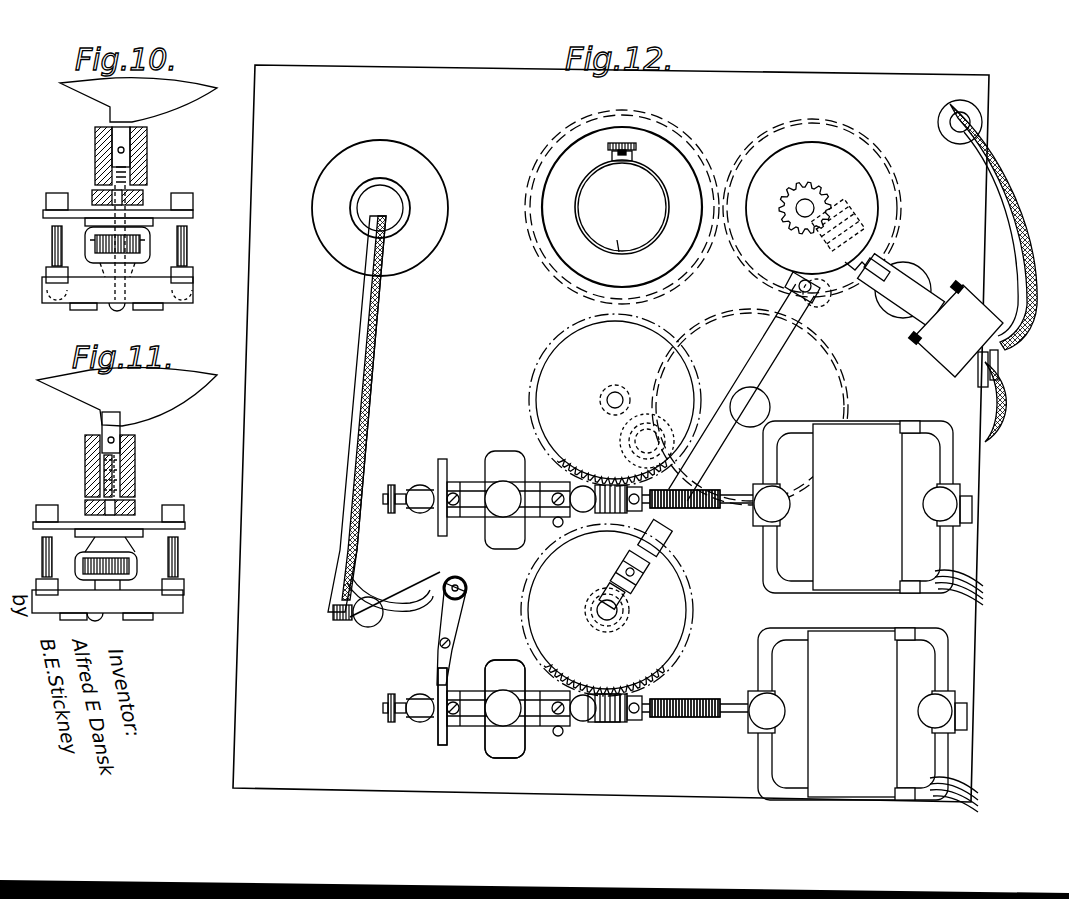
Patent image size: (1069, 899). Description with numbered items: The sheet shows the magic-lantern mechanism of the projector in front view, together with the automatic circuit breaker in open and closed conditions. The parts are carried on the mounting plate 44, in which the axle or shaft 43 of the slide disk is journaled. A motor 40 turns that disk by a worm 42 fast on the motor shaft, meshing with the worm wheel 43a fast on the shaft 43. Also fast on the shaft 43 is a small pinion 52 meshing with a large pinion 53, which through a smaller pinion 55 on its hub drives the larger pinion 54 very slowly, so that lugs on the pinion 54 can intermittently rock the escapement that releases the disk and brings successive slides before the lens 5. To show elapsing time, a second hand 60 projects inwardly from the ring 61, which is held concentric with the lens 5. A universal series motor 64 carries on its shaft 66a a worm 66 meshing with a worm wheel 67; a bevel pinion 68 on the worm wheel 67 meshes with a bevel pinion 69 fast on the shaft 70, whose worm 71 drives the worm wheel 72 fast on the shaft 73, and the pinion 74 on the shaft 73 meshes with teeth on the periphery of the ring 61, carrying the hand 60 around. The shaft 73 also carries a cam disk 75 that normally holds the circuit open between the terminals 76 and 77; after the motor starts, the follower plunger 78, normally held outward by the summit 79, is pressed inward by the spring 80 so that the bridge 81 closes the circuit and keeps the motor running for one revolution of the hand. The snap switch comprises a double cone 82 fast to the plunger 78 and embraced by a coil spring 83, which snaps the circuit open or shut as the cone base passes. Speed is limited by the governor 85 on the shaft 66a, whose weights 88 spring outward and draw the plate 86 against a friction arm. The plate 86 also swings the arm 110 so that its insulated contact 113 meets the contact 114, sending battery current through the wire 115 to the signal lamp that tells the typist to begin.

In FIG. 12, the lens 5 is at (600, 182).
In FIG. 12, the motor 40 is at (868, 513).
In FIG. 12, the worm 42 is at (652, 514).
In FIG. 12, the axle or shaft 43 is at (615, 391).
In FIG. 12, the worm wheel 43a is at (533, 410).
In FIG. 12, the mounting plate 44 is at (240, 645).
In FIG. 12, the small pinion 52 is at (600, 412).
In FIG. 12, the large pinion 53 is at (620, 444).
In FIG. 12, the larger pinion 54 is at (712, 322).
In FIG. 12, the smaller pinion 55 is at (647, 414).
In FIG. 12, the second hand 60 is at (620, 250).
In FIG. 12, the ring 61 is at (692, 156).
In FIG. 12, the series motor 64 is at (863, 720).
In FIG. 12, the worm 66 is at (618, 723).
In FIG. 12, the motor shaft 66a is at (724, 718).
In FIG. 12, the worm wheel 67 is at (688, 628).
In FIG. 12, the bevel pinion 68 is at (620, 622).
In FIG. 12, the bevel pinion 69 is at (638, 592).
In FIG. 12, the shaft 70 is at (718, 445).
In FIG. 12, the worm 71 is at (838, 222).
In FIG. 12, the worm wheel 72 is at (805, 186).
In FIG. 12, the shaft 73 is at (795, 210).
In FIG. 12, the pinion 74 is at (880, 156).
In FIG. 10, the cam disk 75 is at (138, 100).
In FIG. 11, the cam disk 75 is at (127, 396).
In FIG. 12, the cam disk 75 is at (876, 207).
In FIG. 10, the terminal 76 is at (148, 310).
In FIG. 11, the terminal 76 is at (140, 620).
In FIG. 12, the terminal 76 is at (1012, 335).
In FIG. 10, the terminal 77 is at (85, 310).
In FIG. 11, the terminal 77 is at (80, 620).
In FIG. 12, the terminal 77 is at (1004, 380).
In FIG. 10, the follower plunger 78 is at (106, 150).
In FIG. 11, the follower plunger 78 is at (100, 430).
In FIG. 12, the follower plunger 78 is at (872, 278).
In FIG. 10, the summit 79 is at (152, 123).
In FIG. 11, the summit 79 is at (140, 430).
In FIG. 12, the summit 79 is at (882, 242).
In FIG. 10, the spring 80 is at (132, 178).
In FIG. 11, the spring 80 is at (128, 485).
In FIG. 10, the bridge 81 is at (146, 248).
In FIG. 11, the bridge 81 is at (133, 568).
In FIG. 10, the double cone 82 is at (130, 268).
In FIG. 11, the double cone 82 is at (113, 588).
In FIG. 10, the coil spring 83 is at (95, 248).
In FIG. 11, the coil spring 83 is at (86, 568).
In FIG. 12, the governor 85 is at (468, 726).
In FIG. 12, the plate 86 is at (436, 732).
In FIG. 12, the weights 88 is at (517, 748).
In FIG. 12, the arm 110 is at (456, 626).
In FIG. 12, the insulated contact 113 is at (464, 580).
In FIG. 12, the contact 114 is at (420, 590).
In FIG. 12, the wire 115 is at (352, 446).